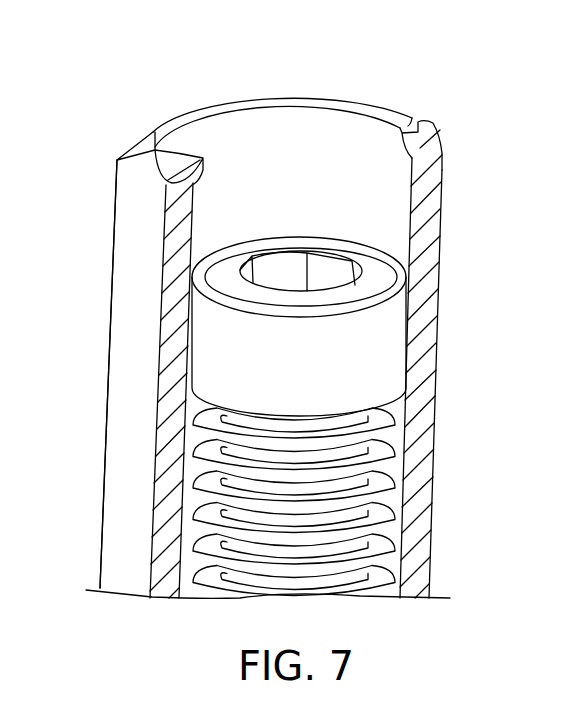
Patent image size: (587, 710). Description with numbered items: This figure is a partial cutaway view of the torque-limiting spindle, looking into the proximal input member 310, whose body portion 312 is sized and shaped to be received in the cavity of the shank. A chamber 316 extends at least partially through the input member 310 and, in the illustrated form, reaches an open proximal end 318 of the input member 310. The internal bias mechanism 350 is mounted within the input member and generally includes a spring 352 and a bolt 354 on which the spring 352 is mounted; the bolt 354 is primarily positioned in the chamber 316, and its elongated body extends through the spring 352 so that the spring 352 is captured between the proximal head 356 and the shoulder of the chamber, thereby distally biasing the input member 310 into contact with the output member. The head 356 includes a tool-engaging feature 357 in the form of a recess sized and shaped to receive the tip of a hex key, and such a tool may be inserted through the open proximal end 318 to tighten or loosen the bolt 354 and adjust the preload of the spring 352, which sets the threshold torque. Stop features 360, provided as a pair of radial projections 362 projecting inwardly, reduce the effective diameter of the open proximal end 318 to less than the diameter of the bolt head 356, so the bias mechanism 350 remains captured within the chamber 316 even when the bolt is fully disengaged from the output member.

The proximal input member 310 is at (92, 268).
The body portion 312 is at (112, 350).
The chamber 316 is at (220, 220).
The open proximal end 318 is at (289, 142).
The internal bias mechanism 350 is at (385, 209).
The spring 352 is at (393, 500).
The bolt 354 is at (410, 463).
The proximal head 356 is at (393, 362).
The tool-engaging feature 357 is at (325, 266).
The stop feature 360 is at (213, 72).
The radial projections 362 is at (186, 153).